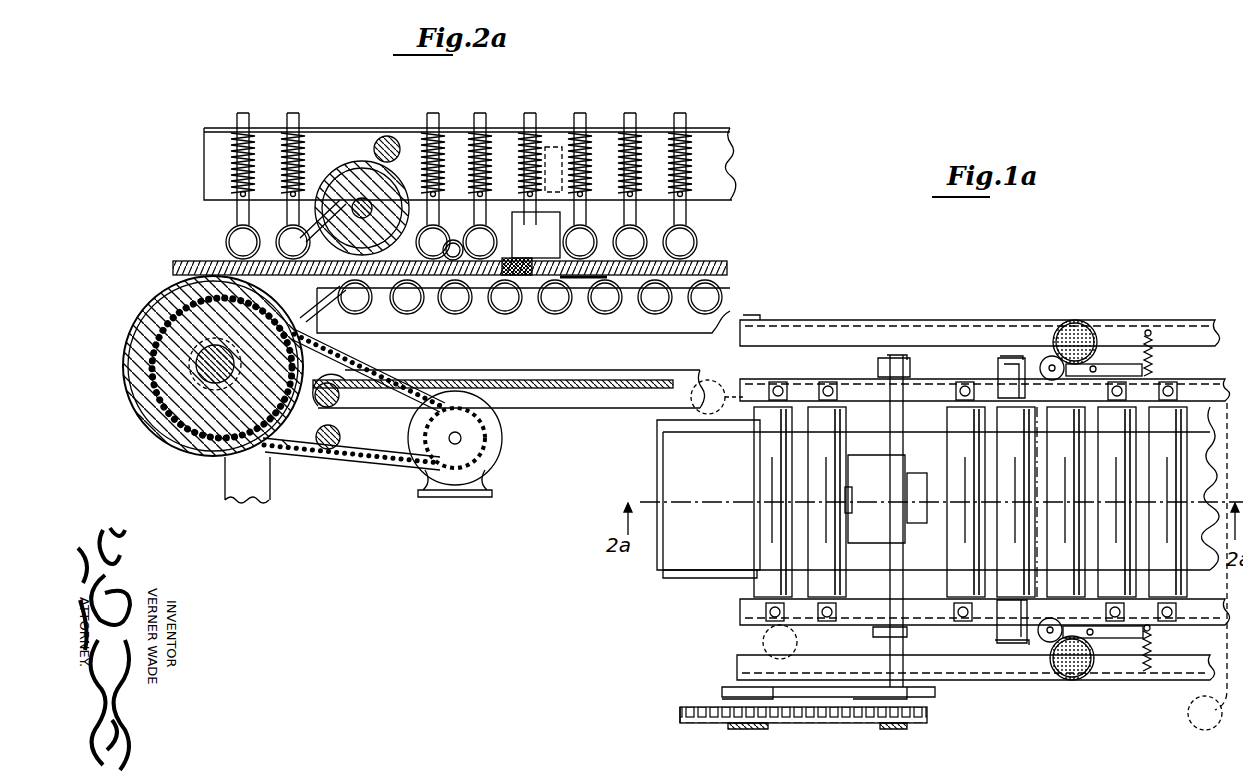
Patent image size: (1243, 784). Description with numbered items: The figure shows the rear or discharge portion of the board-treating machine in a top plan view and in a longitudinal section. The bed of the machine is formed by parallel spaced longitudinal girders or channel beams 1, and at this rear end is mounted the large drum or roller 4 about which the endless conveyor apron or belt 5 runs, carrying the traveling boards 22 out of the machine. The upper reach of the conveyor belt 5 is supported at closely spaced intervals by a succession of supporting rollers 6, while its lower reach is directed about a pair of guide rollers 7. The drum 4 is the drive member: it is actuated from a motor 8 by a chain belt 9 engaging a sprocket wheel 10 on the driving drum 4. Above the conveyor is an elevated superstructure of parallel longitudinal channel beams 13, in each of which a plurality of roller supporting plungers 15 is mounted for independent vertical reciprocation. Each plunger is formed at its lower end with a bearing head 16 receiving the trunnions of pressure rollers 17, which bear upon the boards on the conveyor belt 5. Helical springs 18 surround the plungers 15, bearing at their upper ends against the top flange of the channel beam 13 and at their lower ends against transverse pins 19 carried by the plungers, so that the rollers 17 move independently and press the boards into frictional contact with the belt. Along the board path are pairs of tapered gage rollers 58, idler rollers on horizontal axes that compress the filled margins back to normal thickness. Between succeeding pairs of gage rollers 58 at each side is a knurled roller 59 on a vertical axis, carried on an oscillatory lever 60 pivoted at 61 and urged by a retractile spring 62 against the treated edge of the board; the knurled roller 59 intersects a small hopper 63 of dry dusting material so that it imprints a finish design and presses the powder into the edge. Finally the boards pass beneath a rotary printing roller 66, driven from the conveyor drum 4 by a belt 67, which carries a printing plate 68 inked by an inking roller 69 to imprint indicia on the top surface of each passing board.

In FIG. 2a, the longitudinal girders or channel beams 1 is at (730, 305).
In FIG. 1a, the longitudinal girders or channel beams 1 is at (860, 330).
In FIG. 2a, the drum or roller 4 is at (150, 315).
In FIG. 1a, the drum or roller 4 is at (670, 577).
In FIG. 2a, the endless conveyor apron or belt 5 is at (135, 410).
In FIG. 1a, the endless conveyor apron or belt 5 is at (656, 560).
In FIG. 2a, the supporting rollers 6 is at (612, 313).
In FIG. 2a, the guide rollers 7 is at (340, 437).
In FIG. 2a, the motor 8 is at (490, 448).
In FIG. 2a, the chain belt 9 is at (370, 368).
In FIG. 1a, the chain belt 9 is at (815, 722).
In FIG. 2a, the sprocket wheel 10 is at (290, 446).
In FIG. 1a, the sprocket wheel 10 is at (690, 705).
In FIG. 2a, the longitudinal channel beams 13 is at (706, 137).
In FIG. 1a, the longitudinal channel beams 13 is at (800, 380).
In FIG. 2a, the roller supporting plungers 15 is at (238, 220).
In FIG. 1a, the roller supporting plungers 15 is at (778, 383).
In FIG. 1a, the bearing head 16 is at (744, 519).
In FIG. 2a, the pressure rollers 17 is at (228, 238).
In FIG. 1a, the pressure rollers 17 is at (975, 420).
In FIG. 2a, the helical springs 18 is at (240, 165).
In FIG. 2a, the transverse pins 19 is at (706, 185).
In FIG. 2a, the traveling boards 22 is at (178, 262).
In FIG. 1a, the traveling boards 22 is at (1207, 566).
In FIG. 2a, the tapered gage rollers 58 is at (453, 240).
In FIG. 1a, the tapered gage rollers 58 is at (1015, 390).
In FIG. 2a, the knurled roller 59 is at (508, 257).
In FIG. 1a, the knurled roller 59 is at (1045, 357).
In FIG. 2a, the oscillatory lever 60 is at (585, 312).
In FIG. 1a, the oscillatory lever 60 is at (1115, 364).
In FIG. 1a, the pivot 61 is at (1096, 366).
In FIG. 1a, the retractile spring 62 is at (1150, 355).
In FIG. 2a, the hopper 63 is at (522, 213).
In FIG. 1a, the hopper 63 is at (1077, 321).
In FIG. 2a, the rotary printing roller 66 is at (365, 163).
In FIG. 1a, the rotary printing roller 66 is at (888, 542).
In FIG. 2a, the belt 67 is at (318, 310).
In FIG. 1a, the belt 67 is at (810, 688).
In FIG. 2a, the printing plate 68 is at (312, 215).
In FIG. 1a, the printing plate 68 is at (852, 500).
In FIG. 2a, the inking roller 69 is at (393, 138).
In FIG. 1a, the inking roller 69 is at (907, 478).